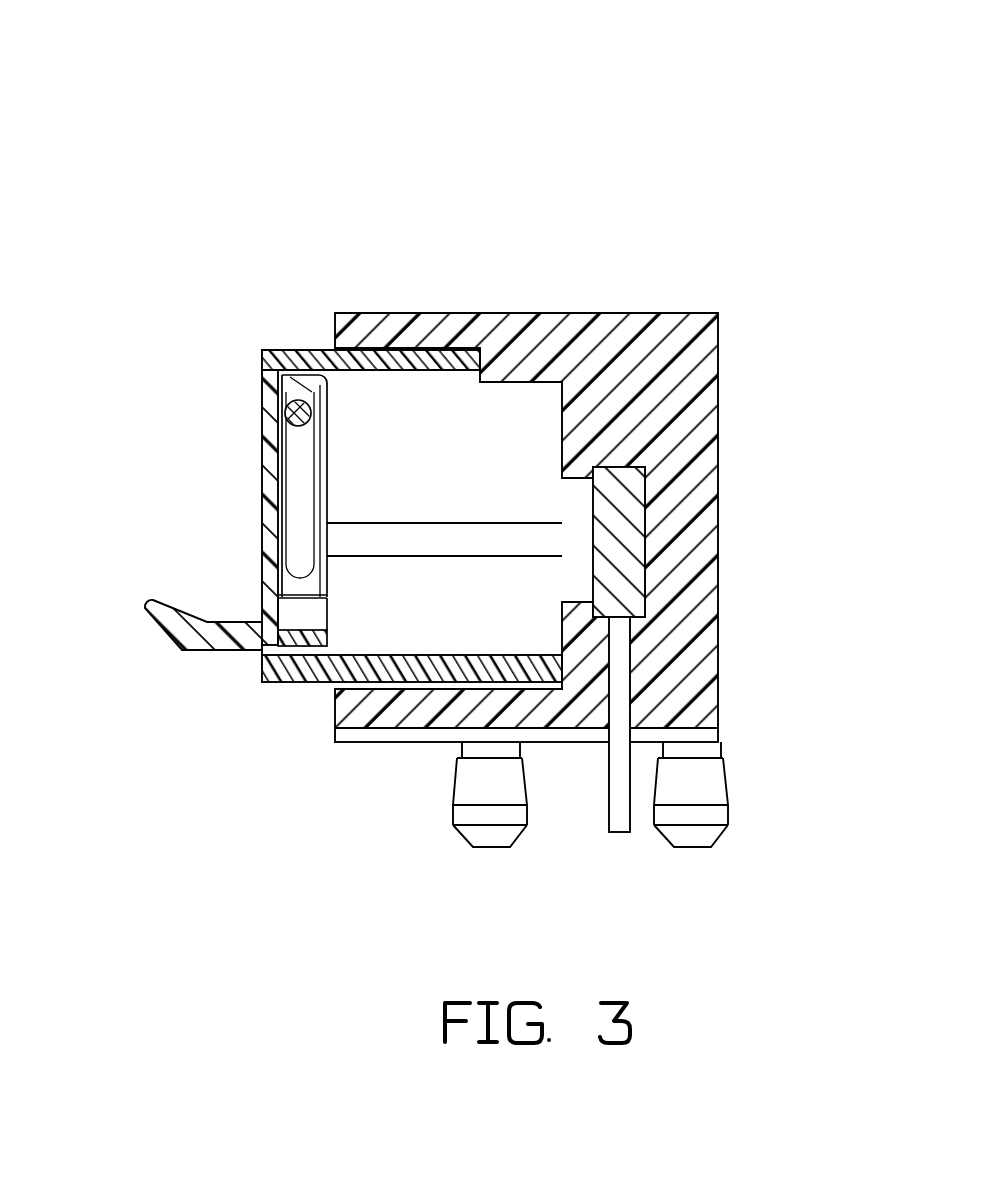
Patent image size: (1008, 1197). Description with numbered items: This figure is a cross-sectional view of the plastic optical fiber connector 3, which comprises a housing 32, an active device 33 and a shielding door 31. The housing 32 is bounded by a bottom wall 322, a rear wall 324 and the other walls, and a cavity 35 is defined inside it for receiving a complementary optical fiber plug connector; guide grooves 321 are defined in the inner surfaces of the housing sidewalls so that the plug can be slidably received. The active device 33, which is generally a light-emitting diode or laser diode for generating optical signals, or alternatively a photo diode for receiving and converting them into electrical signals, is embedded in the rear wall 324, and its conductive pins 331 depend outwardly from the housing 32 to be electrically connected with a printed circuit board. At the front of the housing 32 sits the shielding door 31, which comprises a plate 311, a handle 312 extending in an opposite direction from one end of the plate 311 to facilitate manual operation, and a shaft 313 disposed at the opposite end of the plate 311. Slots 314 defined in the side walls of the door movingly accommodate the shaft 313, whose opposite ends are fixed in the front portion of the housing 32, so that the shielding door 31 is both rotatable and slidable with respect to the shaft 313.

The plastic optical fiber connector 3 is at (624, 46).
The shielding door 31 is at (302, 516).
The plate 311 is at (275, 517).
The handle 312 is at (182, 635).
The shaft 313 is at (292, 408).
The slot 314 is at (300, 488).
The housing 32 is at (554, 542).
The guide groove 321 is at (475, 545).
The bottom wall 322 is at (422, 713).
The rear wall 324 is at (687, 415).
The active device 33 is at (680, 679).
The conductive pin 331 is at (618, 778).
The cavity 35 is at (340, 690).